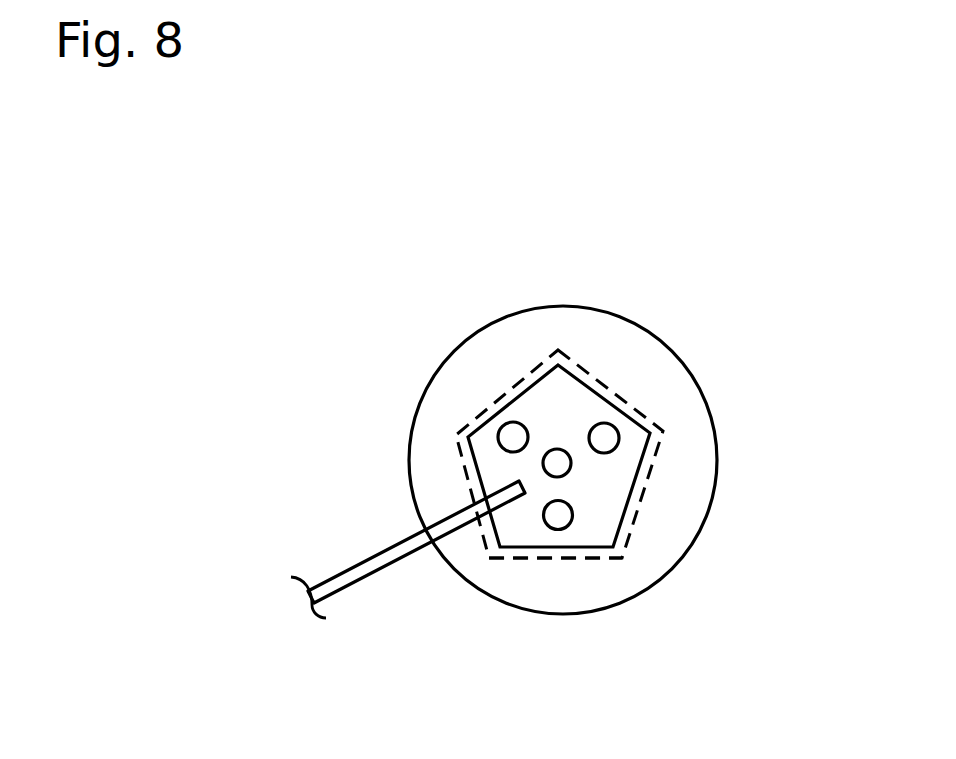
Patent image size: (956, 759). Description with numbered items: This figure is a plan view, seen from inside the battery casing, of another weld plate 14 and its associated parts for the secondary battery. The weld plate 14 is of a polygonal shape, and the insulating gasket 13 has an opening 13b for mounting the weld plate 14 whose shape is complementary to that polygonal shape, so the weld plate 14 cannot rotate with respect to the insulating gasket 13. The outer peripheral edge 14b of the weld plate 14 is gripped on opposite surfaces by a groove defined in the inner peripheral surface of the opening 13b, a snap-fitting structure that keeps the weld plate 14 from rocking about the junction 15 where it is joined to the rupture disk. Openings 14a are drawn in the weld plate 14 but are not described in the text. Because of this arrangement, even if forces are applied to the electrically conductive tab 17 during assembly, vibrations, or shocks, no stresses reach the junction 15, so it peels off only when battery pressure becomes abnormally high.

The insulating gasket 13 is at (655, 367).
The opening 13b is at (627, 405).
The weld plate 14 is at (500, 478).
The holes 14a is at (512, 435).
The outer peripheral edge 14b is at (593, 558).
The junction 15 is at (560, 468).
The electrically conductive tab 17 is at (392, 560).